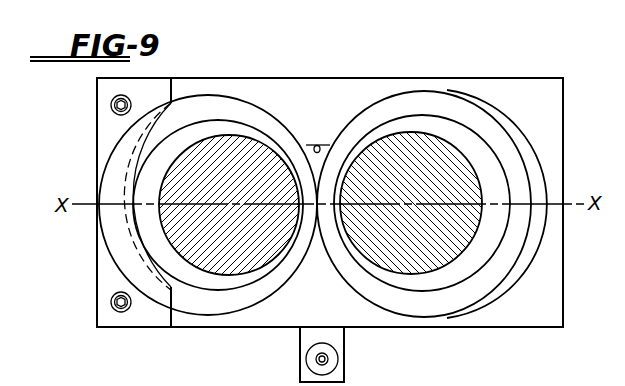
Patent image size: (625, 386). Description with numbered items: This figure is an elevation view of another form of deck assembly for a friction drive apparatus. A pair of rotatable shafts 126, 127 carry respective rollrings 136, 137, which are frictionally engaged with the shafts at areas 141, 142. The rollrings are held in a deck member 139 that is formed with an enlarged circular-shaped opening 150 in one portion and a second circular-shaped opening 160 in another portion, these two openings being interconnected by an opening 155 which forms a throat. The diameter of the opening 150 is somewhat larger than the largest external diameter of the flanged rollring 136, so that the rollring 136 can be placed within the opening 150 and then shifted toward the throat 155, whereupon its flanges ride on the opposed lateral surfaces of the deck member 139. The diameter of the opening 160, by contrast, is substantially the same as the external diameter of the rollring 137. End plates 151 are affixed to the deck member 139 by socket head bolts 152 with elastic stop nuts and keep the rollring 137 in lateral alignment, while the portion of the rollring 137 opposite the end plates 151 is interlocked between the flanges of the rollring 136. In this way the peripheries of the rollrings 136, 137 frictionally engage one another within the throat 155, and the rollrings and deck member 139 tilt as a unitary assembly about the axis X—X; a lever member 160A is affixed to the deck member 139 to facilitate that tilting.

The rotatable shaft 126 is at (458, 227).
The rotatable shaft 127 is at (172, 182).
The rollring 136 is at (361, 290).
The rollring 137 is at (292, 274).
The deck member 139 is at (434, 80).
The area of frictional engagement 141 is at (341, 204).
The area of frictional engagement 142 is at (299, 204).
The circular-shaped opening 150 is at (506, 119).
The end plate 151 is at (163, 97).
The socket head bolt 152 is at (111, 302).
The throat opening 155 is at (318, 143).
The circular-shaped opening 160 is at (243, 107).
The lever member 160A is at (341, 338).